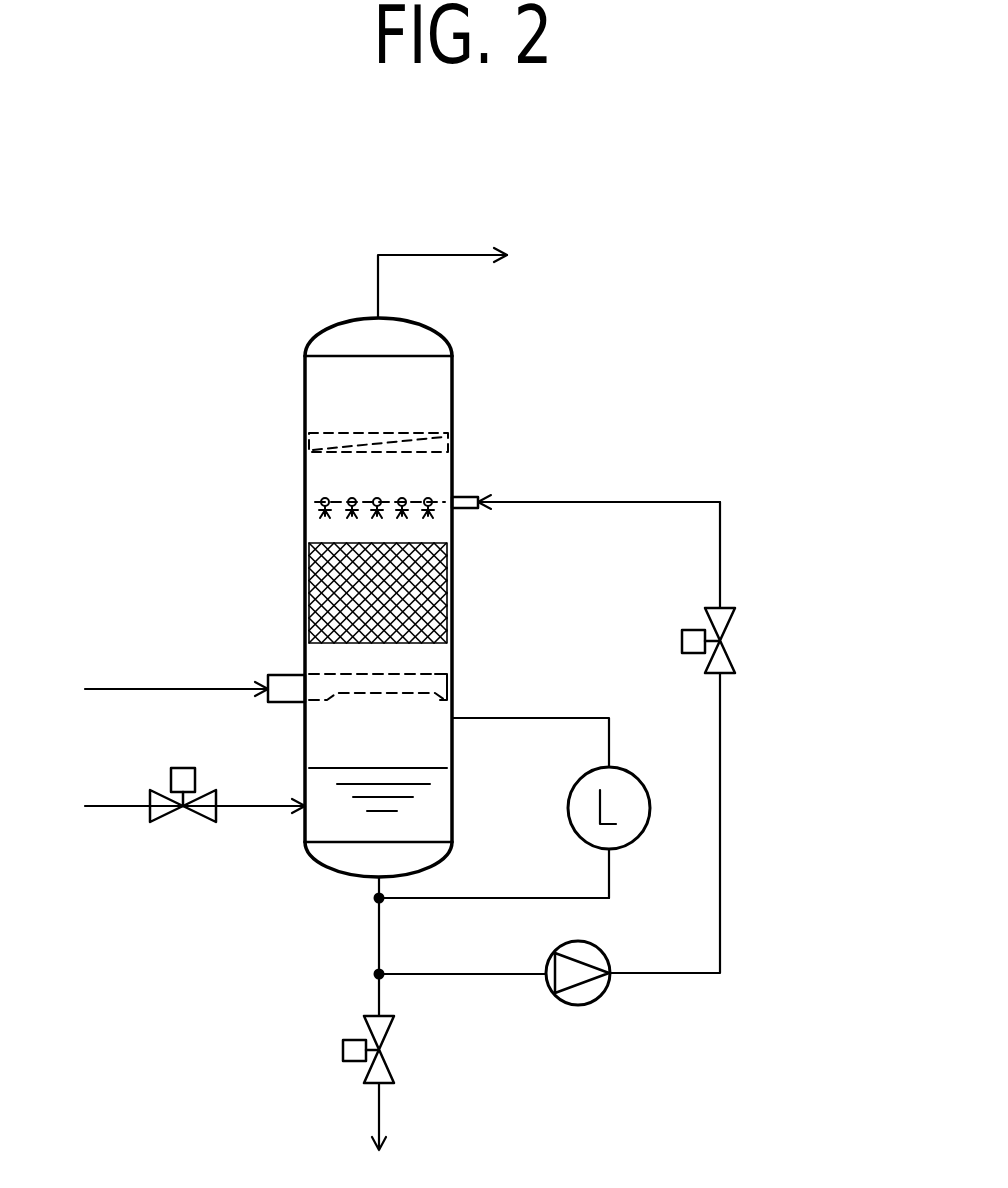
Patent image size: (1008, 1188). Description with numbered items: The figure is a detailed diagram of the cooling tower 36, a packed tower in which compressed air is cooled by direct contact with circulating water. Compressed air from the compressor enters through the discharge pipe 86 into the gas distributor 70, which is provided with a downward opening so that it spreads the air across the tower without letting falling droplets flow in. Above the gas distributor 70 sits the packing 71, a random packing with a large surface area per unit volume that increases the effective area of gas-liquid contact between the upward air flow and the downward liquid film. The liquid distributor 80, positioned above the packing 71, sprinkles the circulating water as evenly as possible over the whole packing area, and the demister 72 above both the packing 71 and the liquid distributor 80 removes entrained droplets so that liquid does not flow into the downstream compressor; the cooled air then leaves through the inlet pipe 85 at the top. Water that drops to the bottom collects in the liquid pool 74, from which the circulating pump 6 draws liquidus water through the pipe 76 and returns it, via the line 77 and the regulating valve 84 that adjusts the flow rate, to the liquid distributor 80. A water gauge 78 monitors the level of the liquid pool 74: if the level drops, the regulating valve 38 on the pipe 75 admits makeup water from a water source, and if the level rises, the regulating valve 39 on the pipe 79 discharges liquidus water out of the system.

The cooling tower 36 is at (455, 388).
The inlet pipe 85 is at (378, 283).
The demister 72 is at (305, 443).
The liquid distributor 80 is at (305, 508).
The packing 71 is at (420, 592).
The gas distributor 70 is at (335, 674).
The discharge pipe 86 is at (140, 689).
The liquid pool 74 is at (365, 778).
The pipe 75 is at (258, 807).
The regulating valve 38 is at (177, 818).
The water gauge 78 is at (642, 782).
The pipe 79 is at (382, 1110).
The regulating valve 39 is at (343, 1050).
The pipe 76 is at (469, 975).
The circulating pump 6 is at (578, 1005).
The circulation line 77 is at (721, 793).
The regulating valve 84 is at (727, 638).